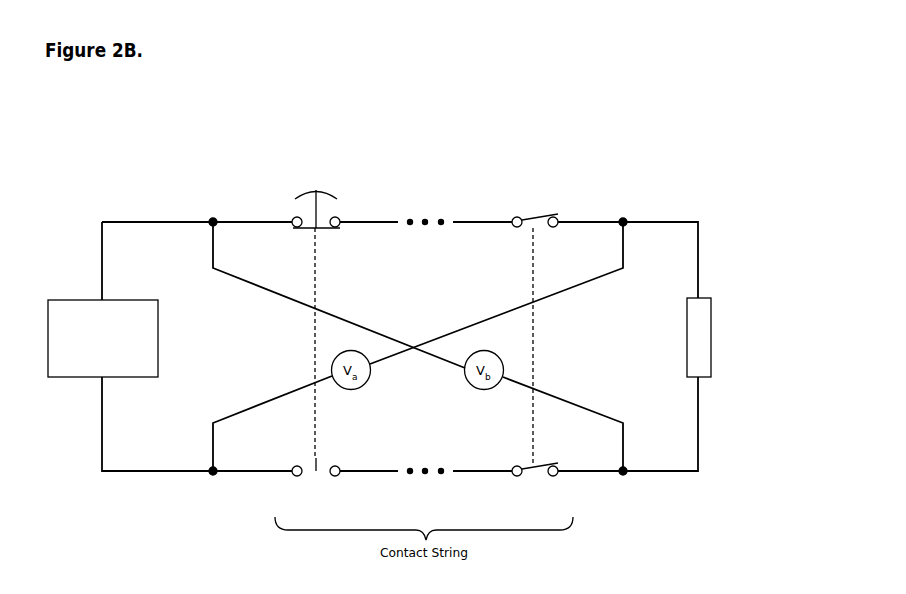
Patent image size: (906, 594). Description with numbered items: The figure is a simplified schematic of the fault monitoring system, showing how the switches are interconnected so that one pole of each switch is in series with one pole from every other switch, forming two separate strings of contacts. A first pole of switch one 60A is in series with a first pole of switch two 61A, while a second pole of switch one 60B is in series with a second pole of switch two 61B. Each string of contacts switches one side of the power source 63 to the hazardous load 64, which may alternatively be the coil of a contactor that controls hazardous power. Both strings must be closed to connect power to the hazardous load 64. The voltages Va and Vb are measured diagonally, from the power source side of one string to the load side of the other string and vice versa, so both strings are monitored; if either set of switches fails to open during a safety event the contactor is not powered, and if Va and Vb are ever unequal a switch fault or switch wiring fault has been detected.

The first pole of switch one 60A is at (316, 197).
The second pole of switch one 60B is at (316, 485).
The first pole of switch two 61A is at (535, 205).
The second pole of switch two 61B is at (535, 487).
The power source 63 is at (72, 378).
The hazardous load 64 is at (703, 307).